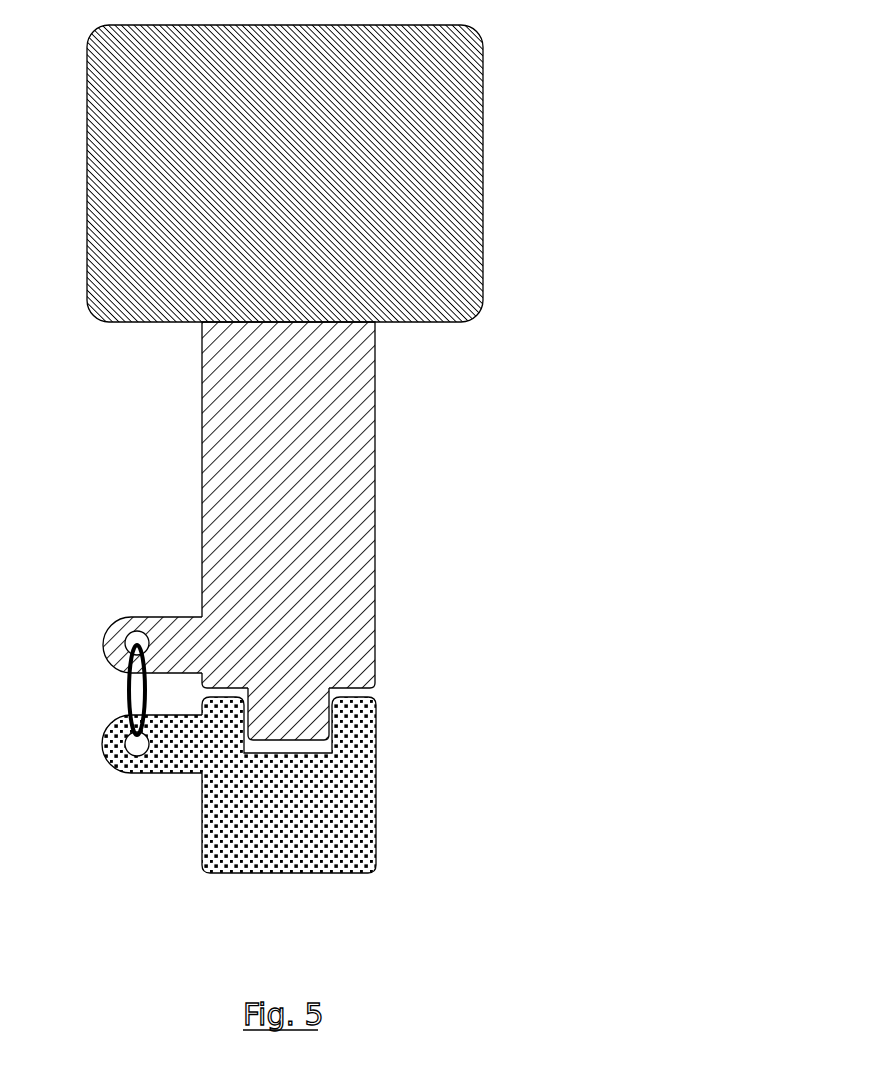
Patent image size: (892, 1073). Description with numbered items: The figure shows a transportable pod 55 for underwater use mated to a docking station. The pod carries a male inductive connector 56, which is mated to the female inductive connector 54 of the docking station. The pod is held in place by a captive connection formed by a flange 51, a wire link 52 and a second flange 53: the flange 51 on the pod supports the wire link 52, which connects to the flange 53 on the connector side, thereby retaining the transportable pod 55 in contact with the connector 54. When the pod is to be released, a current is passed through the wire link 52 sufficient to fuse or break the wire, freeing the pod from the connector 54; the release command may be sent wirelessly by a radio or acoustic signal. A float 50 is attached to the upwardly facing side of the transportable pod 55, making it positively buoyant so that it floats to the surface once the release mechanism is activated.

The float 50 is at (459, 96).
The flange 51 is at (116, 619).
The wire link 52 is at (116, 691).
The flange 53 is at (112, 754).
The female inductive connector 54 is at (369, 781).
The transportable pod 55 is at (389, 467).
The male inductive connector 56 is at (310, 707).